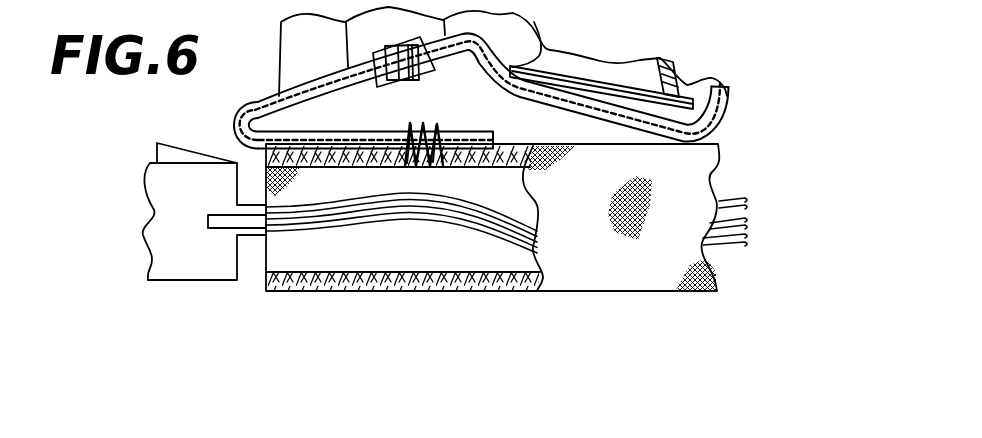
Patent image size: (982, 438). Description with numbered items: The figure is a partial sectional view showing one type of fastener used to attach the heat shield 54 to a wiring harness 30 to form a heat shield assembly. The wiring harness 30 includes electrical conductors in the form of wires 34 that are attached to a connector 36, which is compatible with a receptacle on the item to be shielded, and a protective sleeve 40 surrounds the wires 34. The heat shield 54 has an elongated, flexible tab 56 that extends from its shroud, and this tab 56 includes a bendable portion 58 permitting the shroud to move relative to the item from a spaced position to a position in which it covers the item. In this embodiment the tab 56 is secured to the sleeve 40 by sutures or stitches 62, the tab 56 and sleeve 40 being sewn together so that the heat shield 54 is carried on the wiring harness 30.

The wiring harness 30 is at (340, 281).
The wires 34 is at (488, 233).
The connector 36 is at (188, 263).
The protective sleeve 40 is at (417, 281).
The heat shield 54 is at (735, 112).
The tab 56 is at (317, 134).
The bendable portion 58 is at (233, 117).
The sutures or stitches 62 is at (417, 128).